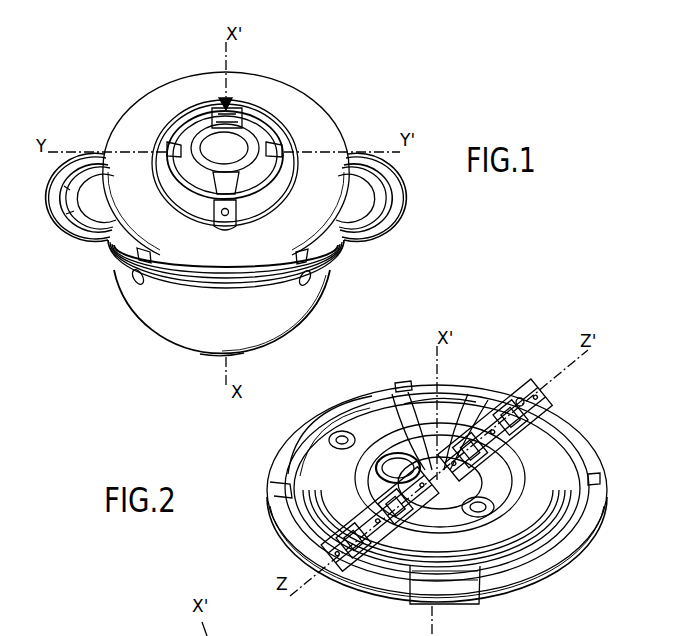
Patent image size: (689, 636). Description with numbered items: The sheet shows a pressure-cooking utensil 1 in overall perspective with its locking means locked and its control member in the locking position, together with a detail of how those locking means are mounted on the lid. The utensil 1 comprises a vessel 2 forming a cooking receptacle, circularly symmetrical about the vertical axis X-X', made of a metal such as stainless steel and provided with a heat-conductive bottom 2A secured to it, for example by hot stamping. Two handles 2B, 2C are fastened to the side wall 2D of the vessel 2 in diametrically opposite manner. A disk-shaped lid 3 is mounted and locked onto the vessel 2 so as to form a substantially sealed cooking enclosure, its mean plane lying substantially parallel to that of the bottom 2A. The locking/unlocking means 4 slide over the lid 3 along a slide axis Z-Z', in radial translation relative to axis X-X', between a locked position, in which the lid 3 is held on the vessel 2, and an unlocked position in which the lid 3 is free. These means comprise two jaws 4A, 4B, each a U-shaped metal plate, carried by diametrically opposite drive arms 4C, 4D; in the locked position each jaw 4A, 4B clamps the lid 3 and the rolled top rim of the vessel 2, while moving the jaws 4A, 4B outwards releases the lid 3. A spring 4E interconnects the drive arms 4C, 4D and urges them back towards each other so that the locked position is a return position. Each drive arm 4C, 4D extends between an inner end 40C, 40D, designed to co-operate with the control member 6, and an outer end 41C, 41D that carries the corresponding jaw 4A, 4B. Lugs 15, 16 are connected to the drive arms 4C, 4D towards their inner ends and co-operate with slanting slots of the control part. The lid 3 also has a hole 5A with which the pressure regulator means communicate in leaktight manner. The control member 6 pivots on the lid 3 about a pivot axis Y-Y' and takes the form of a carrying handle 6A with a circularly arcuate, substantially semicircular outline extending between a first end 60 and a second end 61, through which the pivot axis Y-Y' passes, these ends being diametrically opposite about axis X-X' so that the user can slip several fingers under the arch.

In FIG. 1, the cooking utensil 1 is at (405, 112).
In FIG. 1, the vessel 2 is at (156, 303).
In FIG. 1, the heat-conductive bottom 2A is at (212, 358).
In FIG. 1, the handle 2B is at (70, 216).
In FIG. 1, the handle 2C is at (390, 204).
In FIG. 1, the side wall 2D is at (316, 282).
In FIG. 1, the lid 3 is at (299, 118).
In FIG. 2, the lid 3 is at (586, 546).
In FIG. 1, the locking/unlocking means 4 is at (118, 243).
In FIG. 2, the locking/unlocking means 4 is at (263, 507).
In FIG. 1, the jaw 4A is at (126, 250).
In FIG. 2, the jaw 4A is at (276, 528).
In FIG. 1, the jaw 4B is at (323, 251).
In FIG. 2, the jaw 4B is at (574, 432).
In FIG. 2, the drive arm 4C is at (362, 504).
In FIG. 2, the drive arm 4D is at (535, 462).
In FIG. 2, the spring 4E is at (446, 492).
In FIG. 2, the hole 5A is at (364, 396).
In FIG. 1, the control member 6 is at (168, 193).
In FIG. 1, the carrying handle 6A is at (284, 158).
In FIG. 2, the lug 15 is at (424, 432).
In FIG. 2, the lug 16 is at (508, 470).
In FIG. 2, the inner end 40C is at (400, 466).
In FIG. 2, the inner end 40D is at (444, 424).
In FIG. 2, the outer end 41C is at (362, 548).
In FIG. 2, the outer end 41D is at (530, 412).
In FIG. 1, the first end 60 is at (168, 132).
In FIG. 1, the second end 61 is at (280, 130).